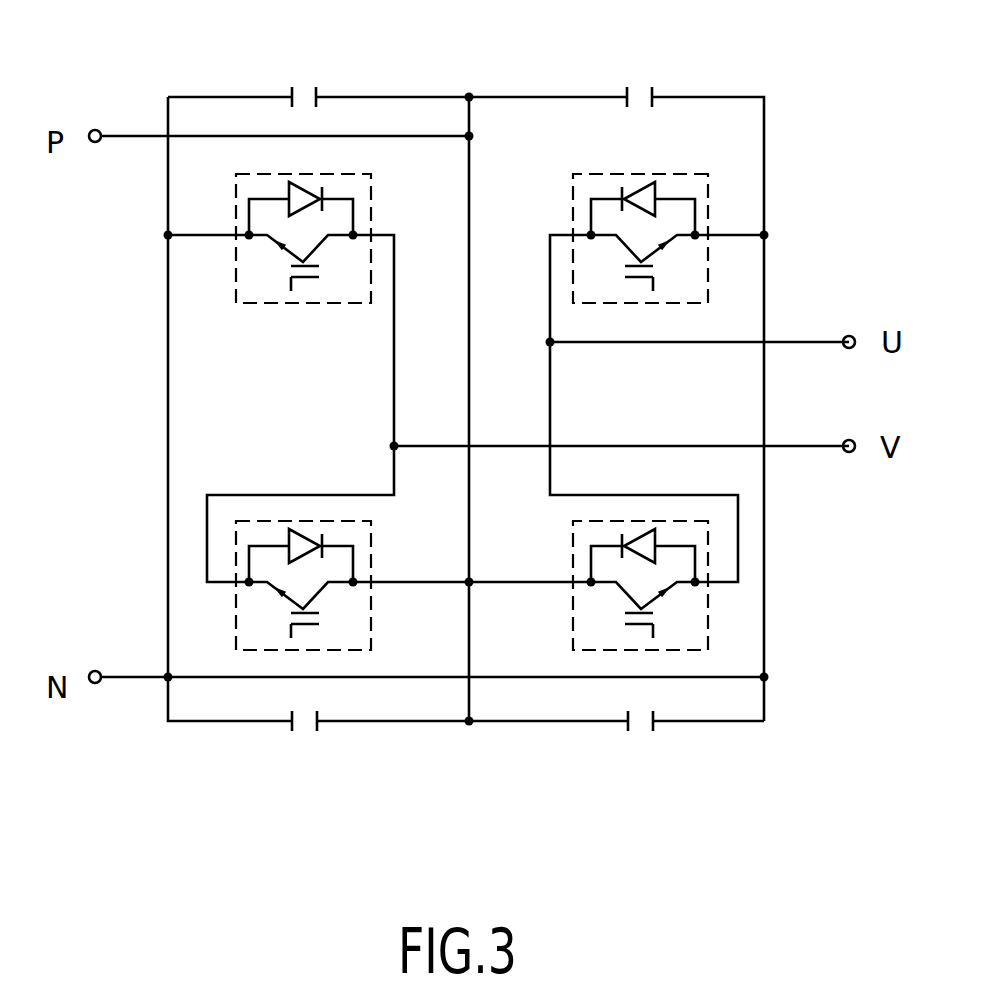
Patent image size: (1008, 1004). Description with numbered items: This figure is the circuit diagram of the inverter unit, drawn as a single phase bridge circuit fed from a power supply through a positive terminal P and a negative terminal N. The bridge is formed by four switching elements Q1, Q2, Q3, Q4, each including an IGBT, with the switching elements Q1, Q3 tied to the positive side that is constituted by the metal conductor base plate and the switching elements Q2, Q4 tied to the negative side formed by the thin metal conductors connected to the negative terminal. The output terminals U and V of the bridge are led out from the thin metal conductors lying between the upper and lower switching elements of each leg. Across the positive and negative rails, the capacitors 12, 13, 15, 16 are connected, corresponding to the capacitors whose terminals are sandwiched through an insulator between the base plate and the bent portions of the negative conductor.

The capacitor 12 is at (643, 735).
The capacitor 13 is at (305, 735).
The capacitor 15 is at (637, 90).
The capacitor 16 is at (303, 90).
The switching element Q1 is at (572, 650).
The switching element Q2 is at (572, 211).
The switching element Q3 is at (373, 638).
The switching element Q4 is at (373, 203).